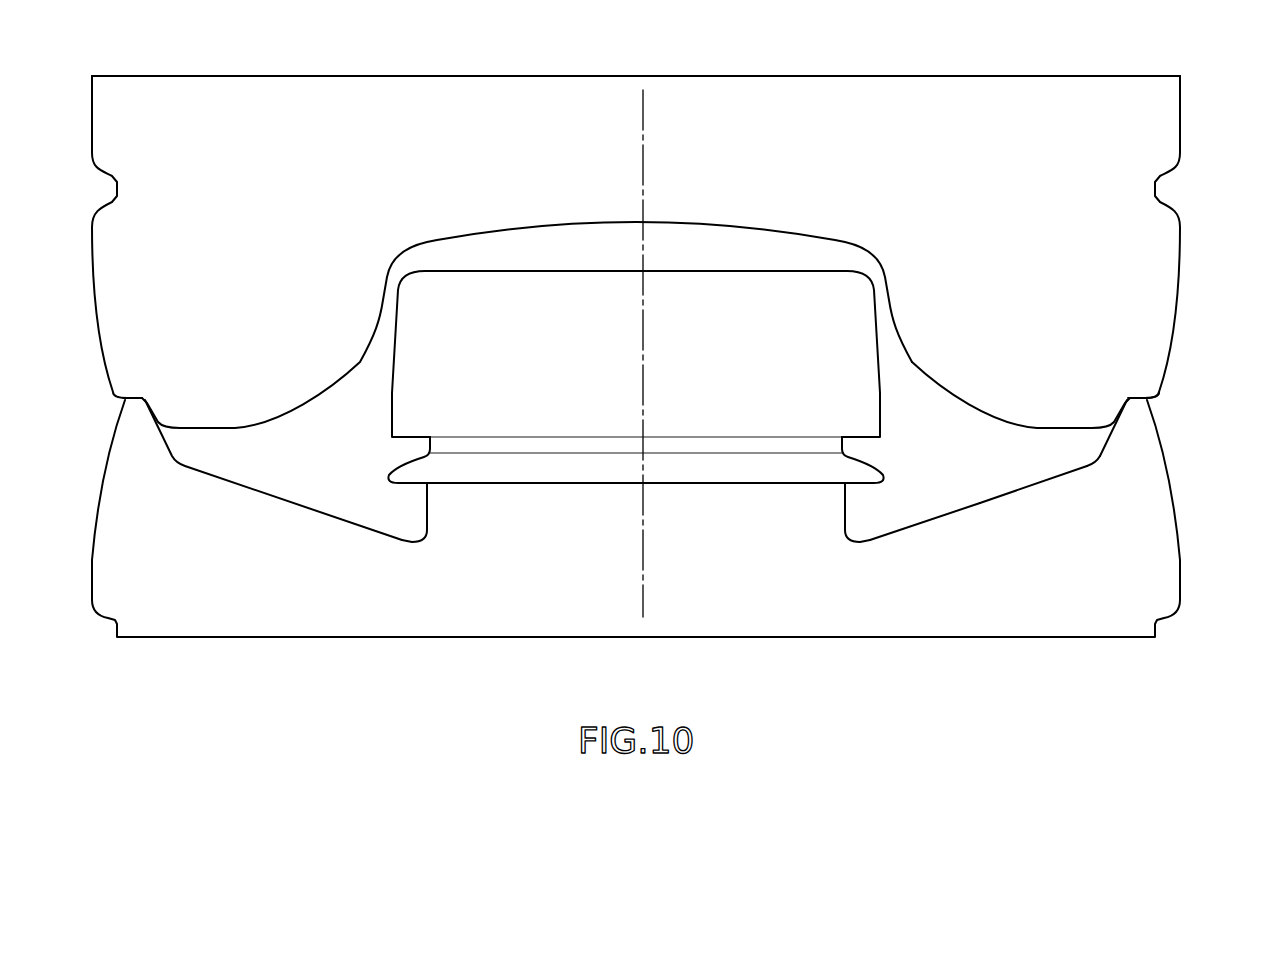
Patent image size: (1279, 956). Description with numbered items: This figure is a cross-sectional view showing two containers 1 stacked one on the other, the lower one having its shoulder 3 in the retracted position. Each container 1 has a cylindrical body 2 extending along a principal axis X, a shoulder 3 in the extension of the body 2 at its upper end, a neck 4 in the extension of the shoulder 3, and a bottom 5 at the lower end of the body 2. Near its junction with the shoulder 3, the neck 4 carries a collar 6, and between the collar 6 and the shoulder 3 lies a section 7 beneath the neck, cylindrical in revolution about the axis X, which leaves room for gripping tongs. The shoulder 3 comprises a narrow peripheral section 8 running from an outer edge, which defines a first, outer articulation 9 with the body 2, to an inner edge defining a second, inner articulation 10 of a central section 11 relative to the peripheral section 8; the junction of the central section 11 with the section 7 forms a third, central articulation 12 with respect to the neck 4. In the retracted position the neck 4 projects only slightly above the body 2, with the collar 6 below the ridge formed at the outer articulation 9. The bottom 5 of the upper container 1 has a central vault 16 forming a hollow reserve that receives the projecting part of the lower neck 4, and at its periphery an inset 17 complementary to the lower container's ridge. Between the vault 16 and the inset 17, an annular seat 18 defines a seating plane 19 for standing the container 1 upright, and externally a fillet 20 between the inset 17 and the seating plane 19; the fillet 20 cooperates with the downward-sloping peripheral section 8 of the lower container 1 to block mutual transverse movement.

The container 1 is at (1183, 109).
The body 2 is at (1183, 578).
The shoulder 3 is at (975, 510).
The neck 4 is at (849, 448).
The bottom 5 is at (957, 410).
The collar 6 is at (864, 483).
The section beneath the neck 7 is at (428, 507).
The peripheral section 8 is at (1112, 440).
The first articulation 9 is at (1123, 388).
The second articulation 10 is at (1100, 467).
The central section 11 is at (998, 501).
The third articulation 12 is at (850, 543).
The vault 16 is at (935, 383).
The inset 17 is at (1140, 393).
The annular seat 18 is at (1033, 429).
The seating plane 19 is at (1063, 430).
The fillet 20 is at (1113, 418).
The principal axis X is at (643, 376).